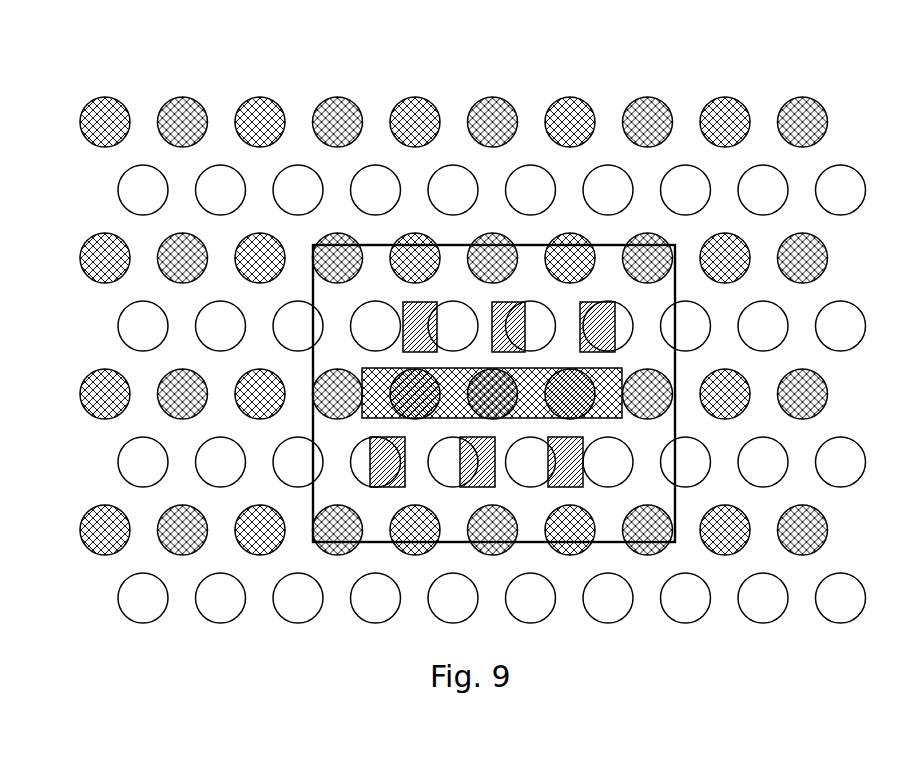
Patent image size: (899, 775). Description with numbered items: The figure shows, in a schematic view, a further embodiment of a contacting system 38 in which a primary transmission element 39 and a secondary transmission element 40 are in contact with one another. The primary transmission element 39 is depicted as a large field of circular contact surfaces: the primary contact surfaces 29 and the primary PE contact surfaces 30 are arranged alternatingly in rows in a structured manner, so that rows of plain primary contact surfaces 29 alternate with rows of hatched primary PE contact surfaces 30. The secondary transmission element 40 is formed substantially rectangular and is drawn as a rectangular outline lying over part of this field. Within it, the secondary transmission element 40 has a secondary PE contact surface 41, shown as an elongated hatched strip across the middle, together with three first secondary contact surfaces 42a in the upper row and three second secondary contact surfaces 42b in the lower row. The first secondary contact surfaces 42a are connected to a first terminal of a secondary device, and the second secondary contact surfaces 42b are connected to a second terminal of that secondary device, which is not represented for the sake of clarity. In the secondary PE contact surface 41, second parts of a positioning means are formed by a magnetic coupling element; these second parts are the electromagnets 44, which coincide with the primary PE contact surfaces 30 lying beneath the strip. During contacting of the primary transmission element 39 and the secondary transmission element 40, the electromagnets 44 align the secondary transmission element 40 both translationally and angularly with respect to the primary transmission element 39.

The primary contact surfaces 29 is at (217, 598).
The primary PE contact surfaces 30 is at (487, 120).
The contacting system 38 is at (98, 593).
The primary transmission element 39 is at (86, 72).
The secondary transmission element 40 is at (586, 218).
The secondary PE contact surface 41 is at (610, 378).
The first secondary contact surfaces 42a is at (585, 303).
The second secondary contact surfaces 42b is at (573, 452).
The electromagnets 44 is at (570, 395).